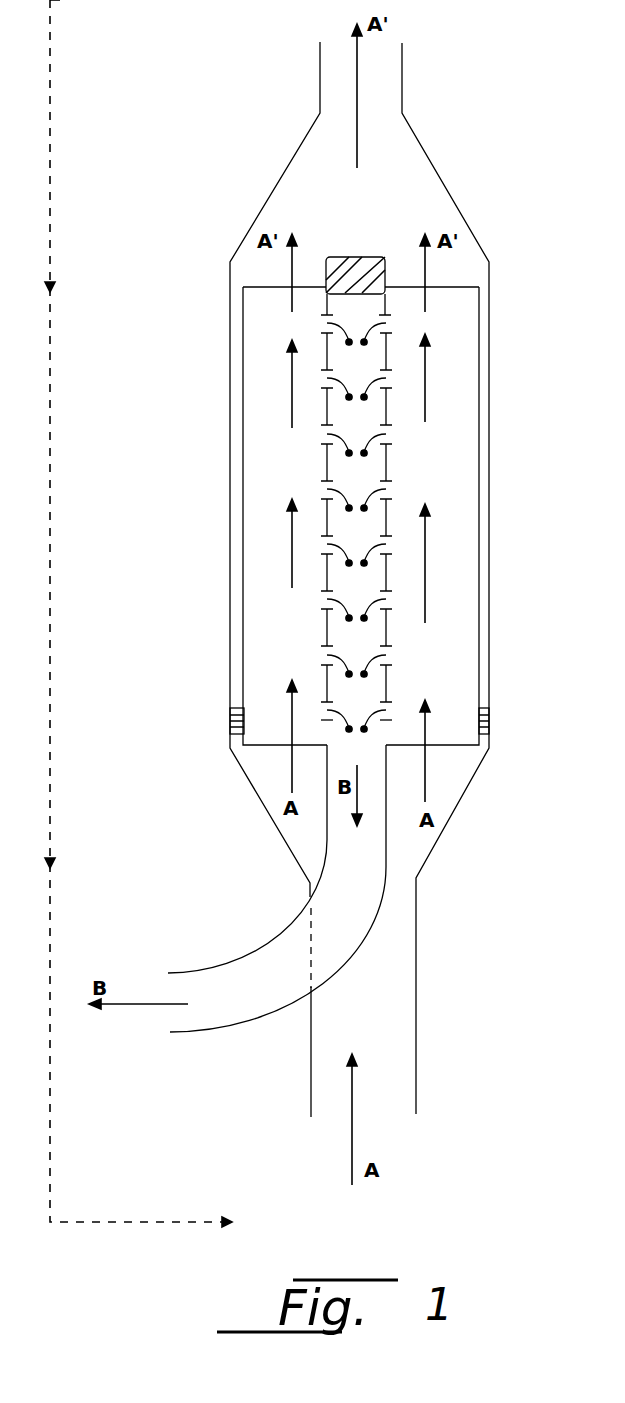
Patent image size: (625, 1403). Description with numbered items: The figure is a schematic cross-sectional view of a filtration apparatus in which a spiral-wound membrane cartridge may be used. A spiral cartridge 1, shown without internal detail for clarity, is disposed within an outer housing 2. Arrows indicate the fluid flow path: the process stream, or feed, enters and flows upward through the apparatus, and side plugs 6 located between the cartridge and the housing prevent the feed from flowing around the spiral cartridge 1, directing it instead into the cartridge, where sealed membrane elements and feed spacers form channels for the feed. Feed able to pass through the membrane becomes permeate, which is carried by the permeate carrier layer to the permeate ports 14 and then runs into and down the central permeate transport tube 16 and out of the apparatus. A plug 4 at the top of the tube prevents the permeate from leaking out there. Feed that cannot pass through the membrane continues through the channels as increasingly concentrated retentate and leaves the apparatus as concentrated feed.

The spiral cartridge 1 is at (474, 318).
The outer housing 2 is at (470, 233).
The plug 4 is at (357, 256).
The side plugs 6 is at (231, 712).
The permeate ports 14 is at (384, 665).
The permeate transport tube 16 is at (388, 462).